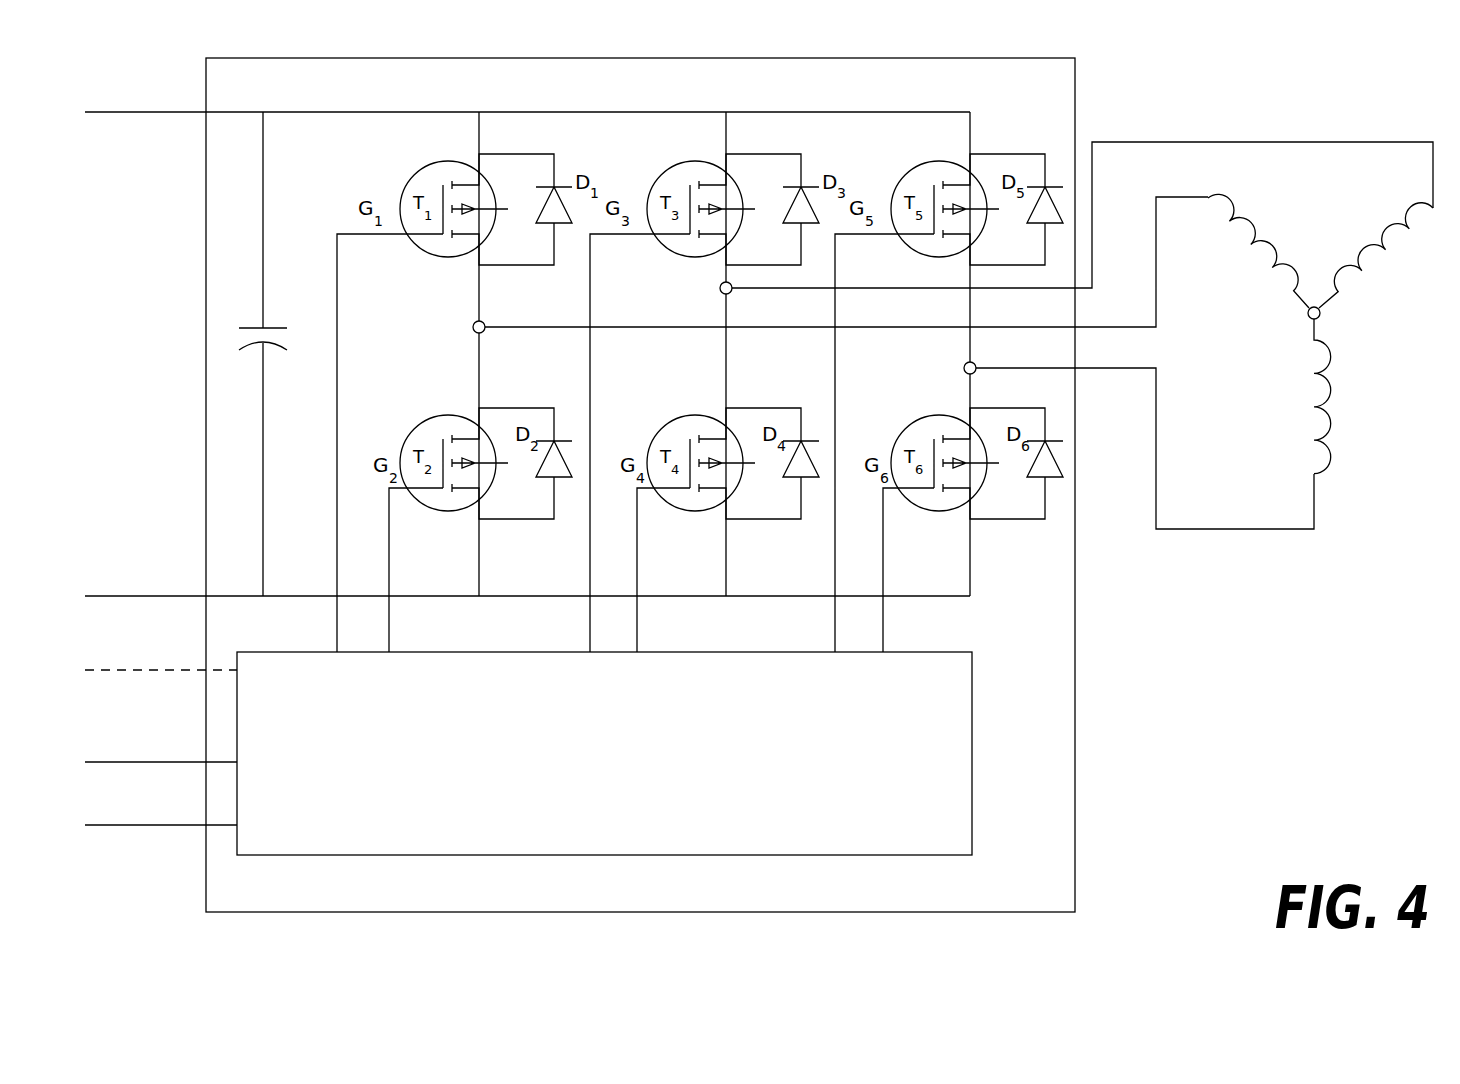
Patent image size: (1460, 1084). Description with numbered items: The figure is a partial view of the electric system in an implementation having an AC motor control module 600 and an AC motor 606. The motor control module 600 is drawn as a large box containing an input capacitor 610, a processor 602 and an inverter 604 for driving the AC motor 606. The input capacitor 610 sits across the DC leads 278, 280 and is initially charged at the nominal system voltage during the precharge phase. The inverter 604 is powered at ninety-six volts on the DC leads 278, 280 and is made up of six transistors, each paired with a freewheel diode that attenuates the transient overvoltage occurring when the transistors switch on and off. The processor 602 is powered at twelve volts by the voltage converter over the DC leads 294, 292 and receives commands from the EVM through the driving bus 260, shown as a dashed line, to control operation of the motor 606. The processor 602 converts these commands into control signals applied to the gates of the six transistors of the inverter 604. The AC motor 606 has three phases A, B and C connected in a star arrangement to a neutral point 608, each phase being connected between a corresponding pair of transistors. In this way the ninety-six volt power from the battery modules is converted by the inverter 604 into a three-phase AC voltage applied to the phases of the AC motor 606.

The DC lead 278 is at (130, 110).
The DC lead 280 is at (140, 594).
The driving bus 260 is at (152, 668).
The DC lead 294 is at (150, 760).
The DC lead 292 is at (135, 827).
The AC motor control module 600 is at (1075, 855).
The processor 602 is at (972, 757).
The inverter 604 is at (323, 251).
The AC motor 606 is at (1339, 540).
The neutral point 608 is at (1311, 319).
The input capacitor 610 is at (257, 345).